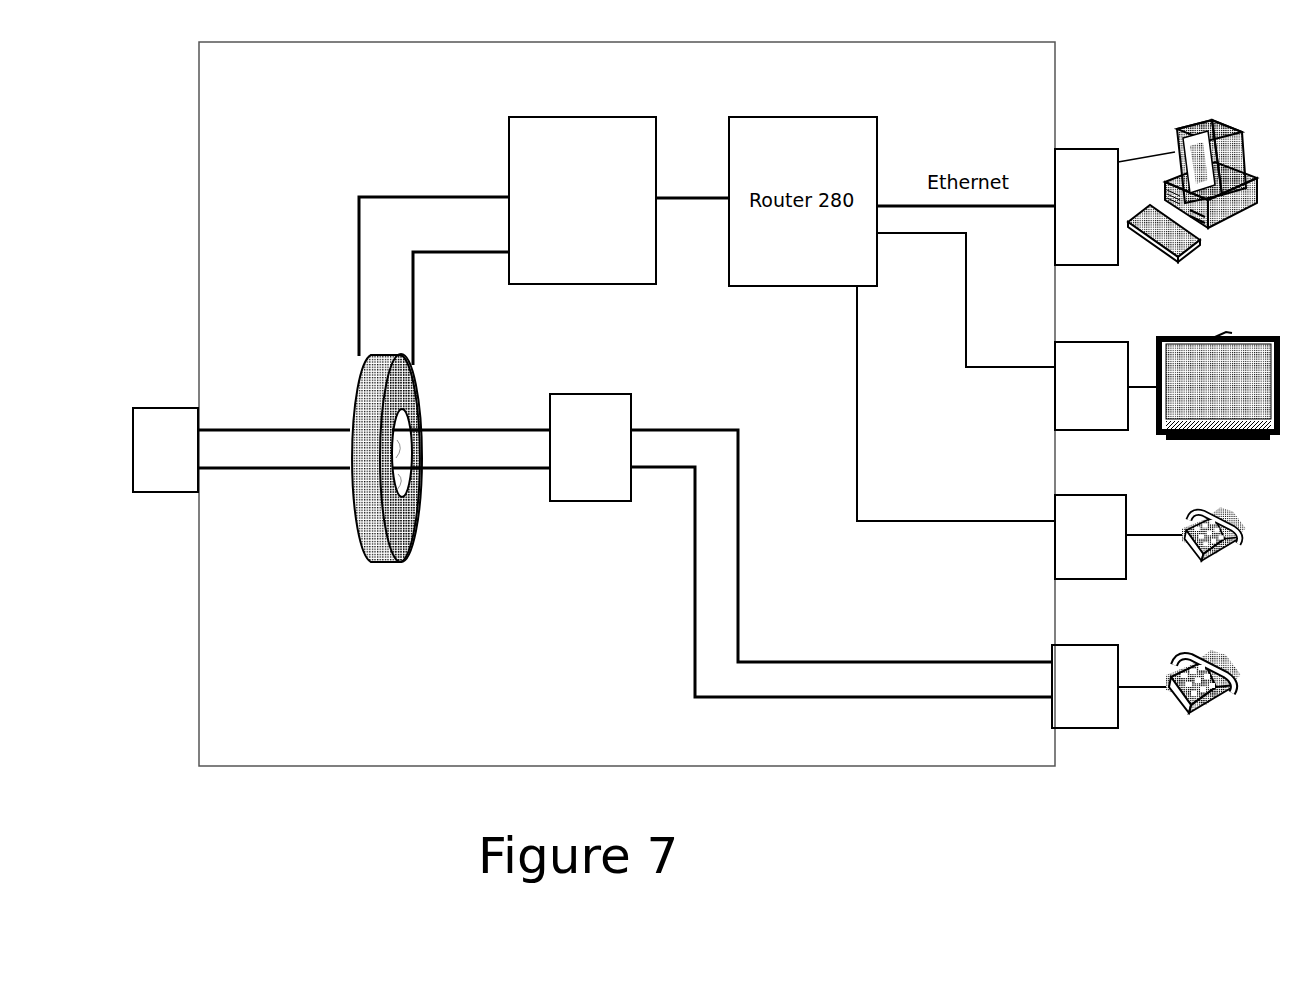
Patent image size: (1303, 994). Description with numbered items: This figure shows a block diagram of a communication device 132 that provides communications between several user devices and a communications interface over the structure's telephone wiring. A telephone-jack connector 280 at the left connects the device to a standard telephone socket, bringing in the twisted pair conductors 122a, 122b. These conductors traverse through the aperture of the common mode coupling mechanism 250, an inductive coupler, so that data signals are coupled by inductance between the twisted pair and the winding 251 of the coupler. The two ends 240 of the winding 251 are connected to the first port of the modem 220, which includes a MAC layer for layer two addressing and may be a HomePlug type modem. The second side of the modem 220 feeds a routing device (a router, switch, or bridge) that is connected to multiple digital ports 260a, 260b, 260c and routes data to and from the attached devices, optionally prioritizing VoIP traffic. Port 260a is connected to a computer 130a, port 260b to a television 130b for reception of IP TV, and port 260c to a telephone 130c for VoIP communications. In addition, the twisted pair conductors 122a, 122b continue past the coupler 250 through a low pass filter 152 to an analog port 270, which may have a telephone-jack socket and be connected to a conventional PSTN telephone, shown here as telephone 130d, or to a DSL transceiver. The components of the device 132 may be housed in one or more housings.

The communication device 132 is at (318, 766).
The RJ-11 connector 280 is at (165, 450).
The twisted pair conductor 122a is at (258, 428).
The twisted pair conductor 122b is at (256, 475).
The common mode coupling mechanism 250 is at (358, 511).
The winding 251 is at (398, 563).
The ends of the winding 240 is at (412, 274).
The modem 220 is at (582, 200).
The low pass filter 152 is at (581, 500).
The port 260a is at (1086, 207).
The port 260b is at (1091, 386).
The port 260c is at (1090, 537).
The port 270 is at (1085, 686).
The computer 130a is at (1192, 202).
The television 130b is at (1218, 401).
The telephone 130c is at (1214, 551).
The telephone 130d is at (1203, 699).